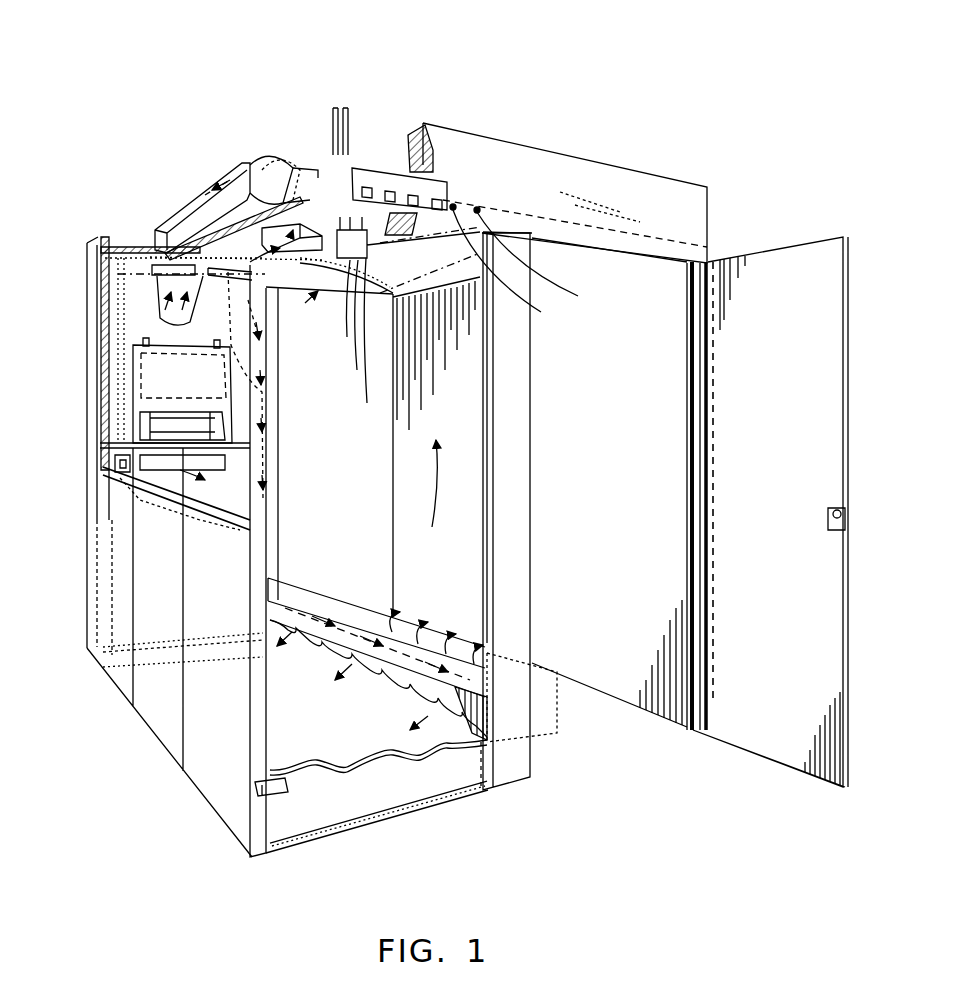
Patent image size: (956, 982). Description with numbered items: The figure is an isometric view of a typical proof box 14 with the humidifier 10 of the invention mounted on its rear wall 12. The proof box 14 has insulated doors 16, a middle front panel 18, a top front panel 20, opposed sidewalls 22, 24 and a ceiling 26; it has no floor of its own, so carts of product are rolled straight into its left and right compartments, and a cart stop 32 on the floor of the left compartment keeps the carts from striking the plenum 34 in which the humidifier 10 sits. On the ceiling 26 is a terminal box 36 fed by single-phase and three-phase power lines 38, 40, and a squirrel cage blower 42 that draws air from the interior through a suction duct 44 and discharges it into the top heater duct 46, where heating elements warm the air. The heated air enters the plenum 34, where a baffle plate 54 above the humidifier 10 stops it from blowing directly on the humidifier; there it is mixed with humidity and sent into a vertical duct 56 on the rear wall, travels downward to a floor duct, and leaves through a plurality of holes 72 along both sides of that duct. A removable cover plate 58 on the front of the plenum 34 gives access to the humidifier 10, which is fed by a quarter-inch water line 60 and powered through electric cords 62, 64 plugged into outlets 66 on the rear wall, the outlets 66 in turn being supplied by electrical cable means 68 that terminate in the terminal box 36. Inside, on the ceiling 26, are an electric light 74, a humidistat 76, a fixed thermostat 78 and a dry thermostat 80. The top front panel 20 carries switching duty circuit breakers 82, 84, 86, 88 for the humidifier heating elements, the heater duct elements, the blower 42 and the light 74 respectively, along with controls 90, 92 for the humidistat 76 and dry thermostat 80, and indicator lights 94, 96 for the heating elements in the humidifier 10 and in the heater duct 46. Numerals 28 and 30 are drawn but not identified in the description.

The humidifier 10 is at (72, 417).
The rear wall 12 is at (184, 475).
The proof box 14 is at (92, 754).
The insulated doors 16 is at (320, 834).
The middle front panel 18 is at (512, 777).
The top front panel 20 is at (580, 172).
The sidewall 22 is at (170, 760).
The sidewall 24 is at (609, 482).
The ceiling 26 is at (580, 214).
The floor heating element 28 is at (326, 750).
The storage compartment 30 is at (602, 752).
The cart stop 32 is at (205, 650).
The plenum 34 is at (175, 379).
The terminal box 36 is at (367, 178).
The power line 38 is at (330, 125).
The power line 40 is at (340, 110).
The squirrel cage blower 42 is at (277, 163).
The suction duct 44 is at (312, 165).
The heater duct 46 is at (190, 210).
The baffle plate 54 is at (168, 313).
The vertical duct 56 is at (268, 408).
The cover plate 58 is at (133, 350).
The water line 60 is at (268, 490).
The electric cord 62 is at (125, 474).
The electric cord 64 is at (150, 472).
The outlets 66 is at (110, 464).
The electrical cable means 68 is at (103, 380).
The holes 72 is at (335, 650).
The electric light 74 is at (407, 350).
The humidistat 76 is at (403, 293).
The fixed thermostat 78 is at (352, 328).
The dry thermostat 80 is at (367, 346).
The switching duty circuit breaker 82 is at (369, 186).
The switching duty circuit breaker 84 is at (391, 190).
The switching duty circuit breaker 86 is at (413, 194).
The switching duty circuit breaker 88 is at (452, 197).
The control 90 is at (512, 267).
The control 92 is at (543, 262).
The indicator light 94 is at (455, 203).
The indicator light 96 is at (478, 206).